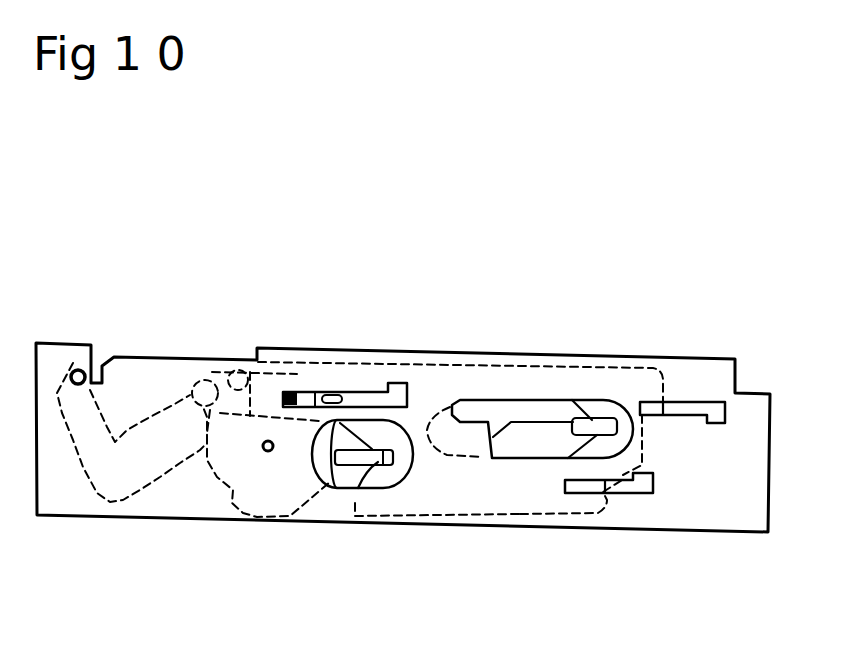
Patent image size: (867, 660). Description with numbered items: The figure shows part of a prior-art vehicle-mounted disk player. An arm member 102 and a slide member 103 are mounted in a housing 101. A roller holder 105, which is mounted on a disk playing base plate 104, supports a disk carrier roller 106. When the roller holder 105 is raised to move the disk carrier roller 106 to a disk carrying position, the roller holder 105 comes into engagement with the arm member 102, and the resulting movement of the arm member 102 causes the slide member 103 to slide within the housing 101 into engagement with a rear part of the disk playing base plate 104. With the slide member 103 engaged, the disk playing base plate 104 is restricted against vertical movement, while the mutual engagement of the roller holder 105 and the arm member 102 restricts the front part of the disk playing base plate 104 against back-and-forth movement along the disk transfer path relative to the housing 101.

The housing 101 is at (697, 533).
The arm member 102 is at (278, 493).
The slide member 103 is at (485, 495).
The disk playing base plate 104 is at (540, 420).
The roller holder 105 is at (155, 457).
The disk carrier roller 106 is at (218, 350).